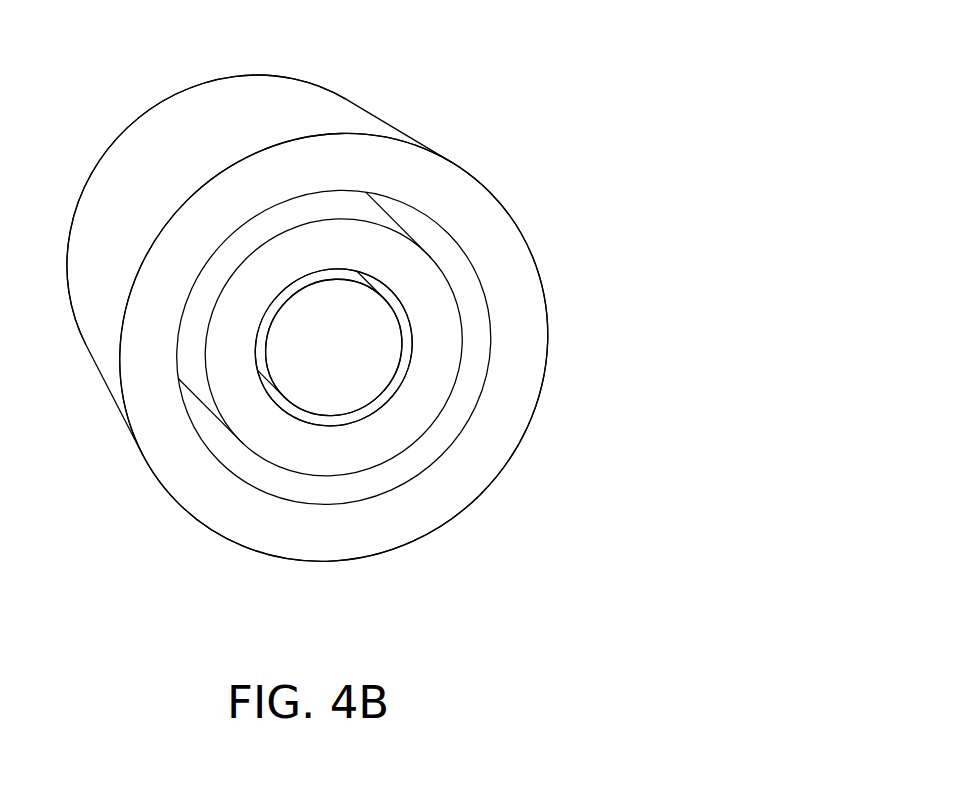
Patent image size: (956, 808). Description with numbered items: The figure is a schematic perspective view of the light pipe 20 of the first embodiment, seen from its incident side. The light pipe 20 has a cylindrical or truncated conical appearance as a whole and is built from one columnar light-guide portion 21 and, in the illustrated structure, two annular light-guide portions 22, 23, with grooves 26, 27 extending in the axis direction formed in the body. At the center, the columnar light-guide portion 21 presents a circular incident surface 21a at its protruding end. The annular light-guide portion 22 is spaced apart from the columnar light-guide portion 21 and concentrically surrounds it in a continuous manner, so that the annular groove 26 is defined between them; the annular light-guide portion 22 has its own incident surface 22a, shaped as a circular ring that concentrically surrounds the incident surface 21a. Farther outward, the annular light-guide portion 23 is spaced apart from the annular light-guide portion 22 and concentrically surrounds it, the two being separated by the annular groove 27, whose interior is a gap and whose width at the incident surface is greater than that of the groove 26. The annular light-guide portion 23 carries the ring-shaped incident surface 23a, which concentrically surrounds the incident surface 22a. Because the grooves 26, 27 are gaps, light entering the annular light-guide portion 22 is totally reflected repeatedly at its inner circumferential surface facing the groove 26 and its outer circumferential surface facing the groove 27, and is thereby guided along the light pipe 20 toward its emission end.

The light pipe 20 is at (432, 90).
The columnar light-guide portion 21 is at (340, 353).
The incident surface 21a is at (362, 370).
The annular light-guide portion 22 is at (287, 440).
The incident surface 22a is at (427, 388).
The annular light-guide portion 23 is at (199, 480).
The incident surface 23a is at (518, 363).
The groove 26 is at (407, 322).
The groove 27 is at (476, 317).